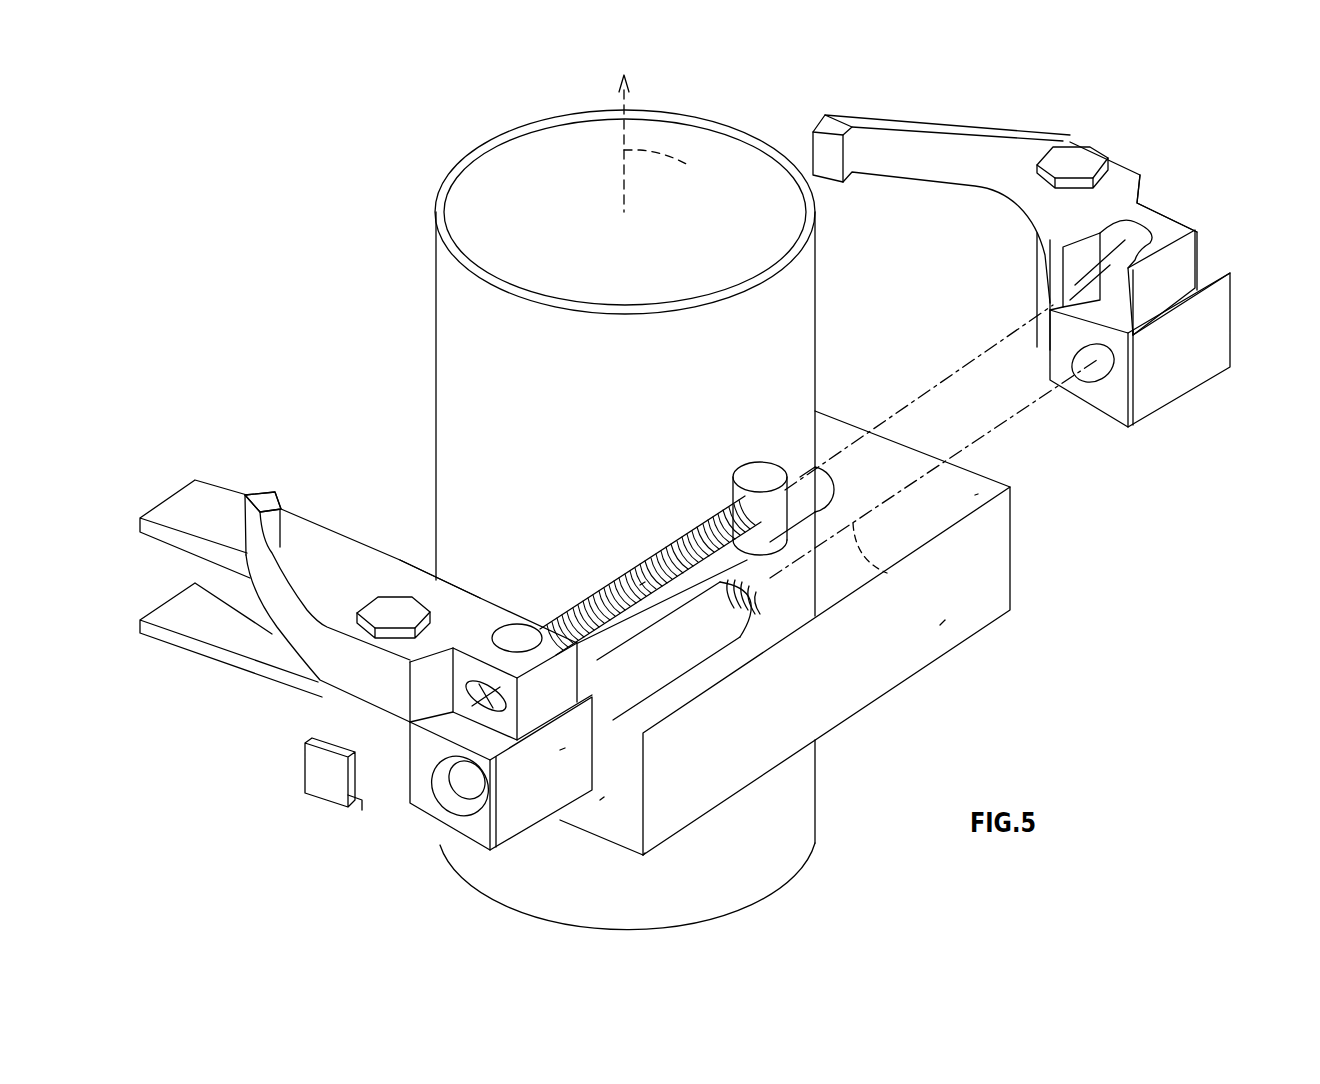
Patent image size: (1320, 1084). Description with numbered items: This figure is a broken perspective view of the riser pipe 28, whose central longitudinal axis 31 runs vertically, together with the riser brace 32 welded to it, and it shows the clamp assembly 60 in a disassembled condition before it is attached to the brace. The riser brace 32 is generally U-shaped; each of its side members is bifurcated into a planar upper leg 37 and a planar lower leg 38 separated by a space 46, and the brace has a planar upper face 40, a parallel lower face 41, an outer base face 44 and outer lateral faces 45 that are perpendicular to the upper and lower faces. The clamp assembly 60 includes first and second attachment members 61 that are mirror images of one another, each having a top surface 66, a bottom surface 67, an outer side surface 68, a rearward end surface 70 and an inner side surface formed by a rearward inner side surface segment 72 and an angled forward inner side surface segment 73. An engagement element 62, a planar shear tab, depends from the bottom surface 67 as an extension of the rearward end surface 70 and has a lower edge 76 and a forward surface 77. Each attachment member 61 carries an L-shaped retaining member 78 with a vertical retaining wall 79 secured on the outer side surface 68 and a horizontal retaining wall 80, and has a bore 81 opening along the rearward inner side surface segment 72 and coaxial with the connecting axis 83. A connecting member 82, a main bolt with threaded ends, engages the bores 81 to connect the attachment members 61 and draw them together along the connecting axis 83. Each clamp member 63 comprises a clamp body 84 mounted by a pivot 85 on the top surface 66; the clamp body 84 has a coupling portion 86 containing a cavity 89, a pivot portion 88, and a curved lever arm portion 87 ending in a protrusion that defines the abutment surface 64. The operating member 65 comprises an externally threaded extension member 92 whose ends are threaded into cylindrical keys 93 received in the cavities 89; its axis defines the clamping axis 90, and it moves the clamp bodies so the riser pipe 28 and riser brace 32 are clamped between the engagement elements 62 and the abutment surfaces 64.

The riser pipe 28 is at (812, 278).
The central longitudinal axis 31 is at (665, 143).
The riser brace 32 is at (1022, 600).
The upper leg 37 is at (178, 555).
The lower leg 38 is at (256, 694).
The upper face 40 is at (975, 495).
The lower face 41 is at (643, 856).
The outer base face 44 is at (940, 625).
The outer lateral face 45 is at (612, 805).
The space 46 is at (255, 640).
The clamp assembly 60 is at (1190, 102).
The attachment member 61 is at (478, 850).
The engagement element 62 is at (505, 862).
The clamp member 63 is at (425, 600).
The abutment surface 64 is at (260, 490).
The operating member 65 is at (632, 580).
The top surface 66 is at (1212, 282).
The bottom surface 67 is at (458, 864).
The outer side surface 68 is at (432, 772).
The rearward end surface 70 is at (565, 755).
The rearward inner side surface segment 72 is at (1060, 322).
The forward inner side surface segment 73 is at (1040, 302).
The lower edge 76 is at (540, 820).
The forward surface 77 is at (488, 852).
The retaining member 78 is at (298, 782).
The vertical retaining wall 79 is at (325, 802).
The horizontal retaining wall 80 is at (360, 822).
The bore 81 is at (450, 800).
The connecting member 82 is at (740, 645).
The connecting axis 83 is at (890, 573).
The clamp body 84 is at (463, 623).
The pivot 85 is at (390, 606).
The coupling portion 86 is at (590, 652).
The lever arm portion 87 is at (245, 525).
The pivot portion 88 is at (1150, 187).
The cavity 89 is at (540, 620).
The clamping axis 90 is at (950, 372).
The extension member 92 is at (650, 560).
The key 93 is at (758, 472).